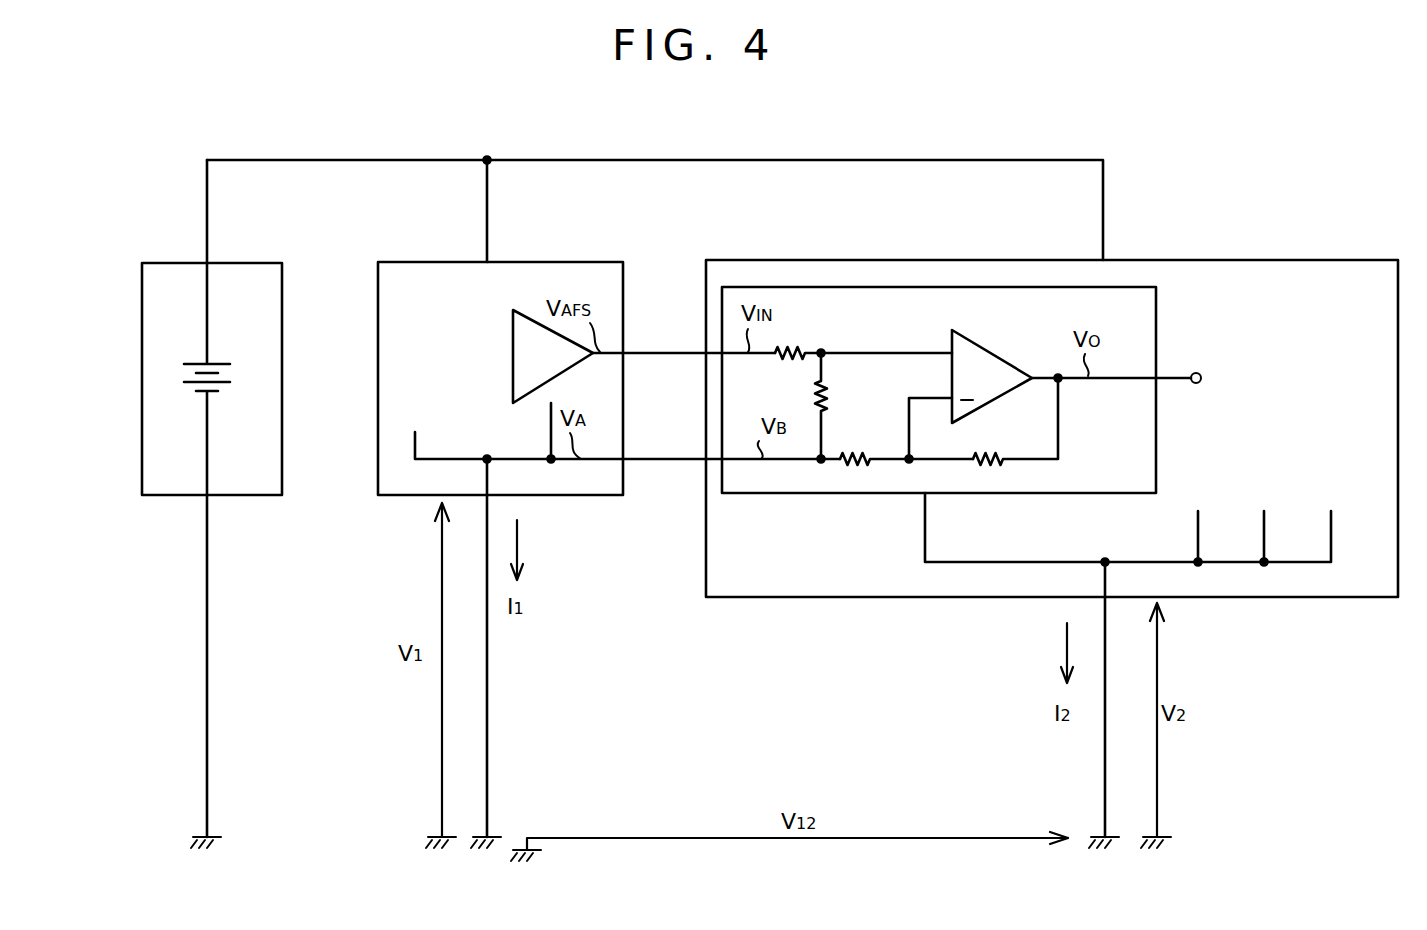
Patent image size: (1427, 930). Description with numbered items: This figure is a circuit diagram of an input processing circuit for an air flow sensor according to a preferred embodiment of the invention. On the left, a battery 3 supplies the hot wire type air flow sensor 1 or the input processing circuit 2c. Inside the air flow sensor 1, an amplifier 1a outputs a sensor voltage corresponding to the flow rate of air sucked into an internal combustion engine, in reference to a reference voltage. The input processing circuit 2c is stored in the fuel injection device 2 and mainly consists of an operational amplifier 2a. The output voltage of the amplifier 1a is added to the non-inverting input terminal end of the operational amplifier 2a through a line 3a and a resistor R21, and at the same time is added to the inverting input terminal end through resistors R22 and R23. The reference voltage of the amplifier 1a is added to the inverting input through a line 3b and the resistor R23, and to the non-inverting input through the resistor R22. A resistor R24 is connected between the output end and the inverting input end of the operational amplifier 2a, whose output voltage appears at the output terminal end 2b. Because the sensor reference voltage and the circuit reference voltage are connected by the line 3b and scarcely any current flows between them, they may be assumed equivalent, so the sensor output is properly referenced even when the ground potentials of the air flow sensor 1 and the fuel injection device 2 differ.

The air flow sensor 1 is at (585, 262).
The amplifier 1a is at (523, 310).
The fuel injection device 2 is at (1248, 259).
The operational amplifier 2a is at (1001, 349).
The output terminal end 2b is at (1201, 381).
The input processing circuit 2c is at (1157, 471).
The battery 3 is at (263, 263).
The line 3a is at (658, 351).
The line 3b is at (653, 461).
The resistor R21 is at (792, 364).
The resistor R22 is at (832, 398).
The resistor R23 is at (861, 457).
The resistor R24 is at (996, 456).